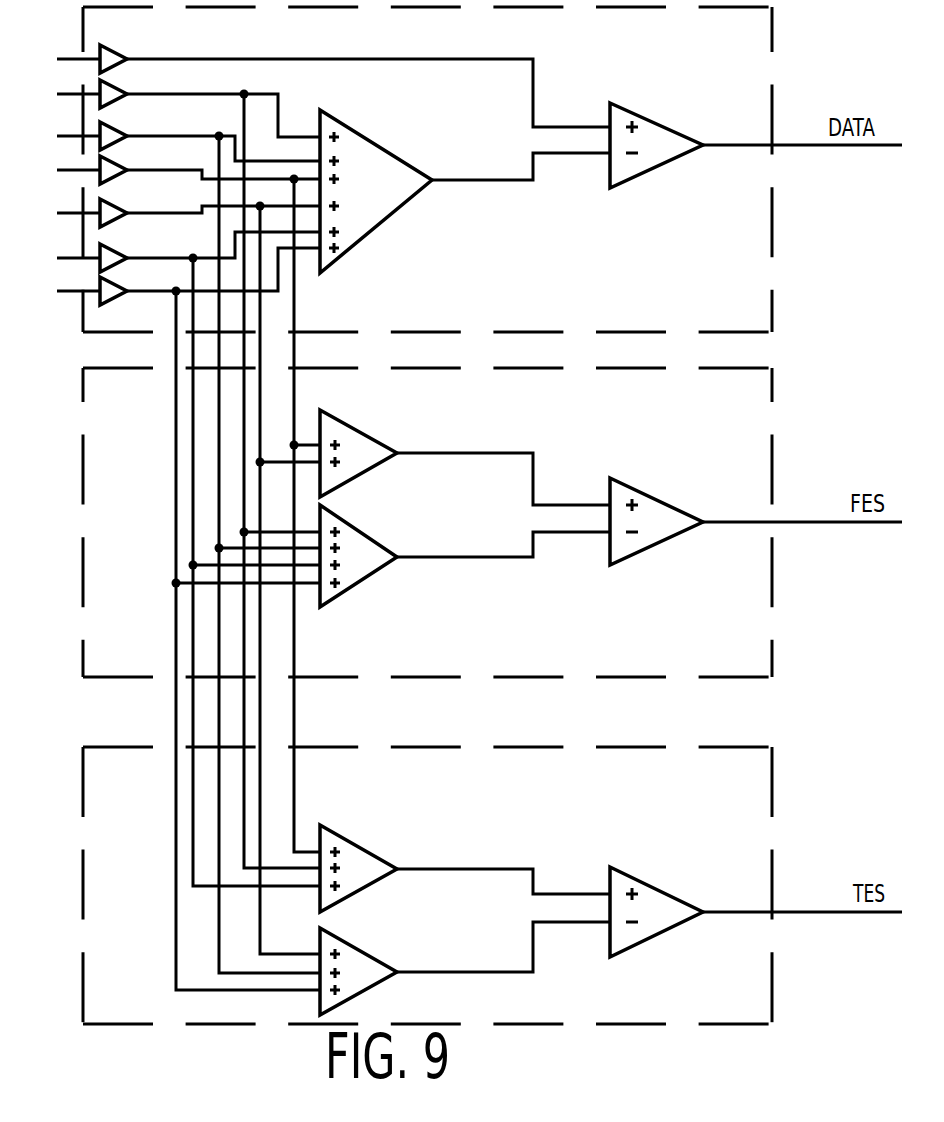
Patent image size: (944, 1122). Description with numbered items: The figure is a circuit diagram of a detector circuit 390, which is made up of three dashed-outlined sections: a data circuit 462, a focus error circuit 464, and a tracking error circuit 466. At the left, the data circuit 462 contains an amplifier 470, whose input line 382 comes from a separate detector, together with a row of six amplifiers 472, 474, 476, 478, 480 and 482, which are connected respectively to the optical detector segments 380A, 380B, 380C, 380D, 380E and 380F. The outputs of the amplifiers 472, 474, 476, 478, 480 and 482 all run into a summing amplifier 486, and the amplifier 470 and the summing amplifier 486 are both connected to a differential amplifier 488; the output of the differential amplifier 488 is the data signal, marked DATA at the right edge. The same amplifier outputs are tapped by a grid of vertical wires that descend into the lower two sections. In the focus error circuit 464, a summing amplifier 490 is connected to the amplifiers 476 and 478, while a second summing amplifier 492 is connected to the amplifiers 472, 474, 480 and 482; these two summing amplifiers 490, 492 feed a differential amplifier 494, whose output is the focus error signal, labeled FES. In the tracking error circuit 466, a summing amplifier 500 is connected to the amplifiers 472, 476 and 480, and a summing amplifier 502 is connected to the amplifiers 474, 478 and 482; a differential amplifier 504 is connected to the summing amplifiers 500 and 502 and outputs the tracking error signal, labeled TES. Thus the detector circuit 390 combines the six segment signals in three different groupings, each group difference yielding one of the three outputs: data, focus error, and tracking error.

The detector circuit 390 is at (217, 1033).
The sum signal input line 382 is at (66, 43).
The optical detector segment A 380A is at (66, 77).
The optical detector segment B 380B is at (66, 119).
The optical detector segment C 380C is at (66, 153).
The optical detector segment D 380D is at (66, 196).
The optical detector segment E 380E is at (66, 241).
The optical detector segment F 380F is at (66, 274).
The amplifier 470 is at (112, 51).
The amplifier 472 is at (112, 86).
The amplifier 474 is at (112, 128).
The amplifier 476 is at (112, 162).
The amplifier 478 is at (112, 205).
The amplifier 480 is at (112, 250).
The amplifier 482 is at (112, 283).
The summing amplifier 486 is at (393, 150).
The differential amplifier 488 is at (657, 122).
The data circuit 462 is at (773, 232).
The summing amplifier 490 is at (363, 433).
The summing amplifier 492 is at (363, 534).
The differential amplifier 494 is at (662, 500).
The focus error circuit 464 is at (772, 460).
The summing amplifier 500 is at (363, 849).
The summing amplifier 502 is at (363, 958).
The differential amplifier 504 is at (663, 890).
The tracking error circuit 466 is at (772, 770).